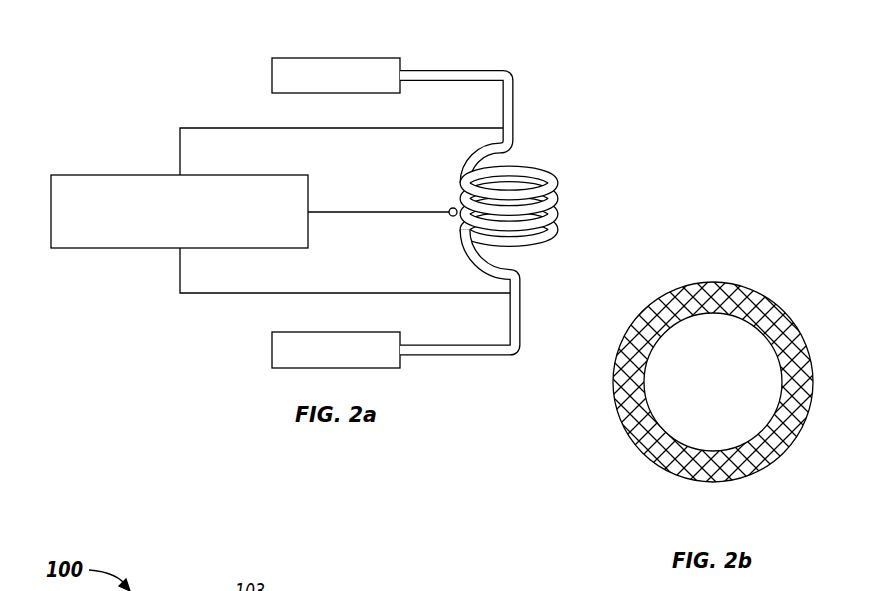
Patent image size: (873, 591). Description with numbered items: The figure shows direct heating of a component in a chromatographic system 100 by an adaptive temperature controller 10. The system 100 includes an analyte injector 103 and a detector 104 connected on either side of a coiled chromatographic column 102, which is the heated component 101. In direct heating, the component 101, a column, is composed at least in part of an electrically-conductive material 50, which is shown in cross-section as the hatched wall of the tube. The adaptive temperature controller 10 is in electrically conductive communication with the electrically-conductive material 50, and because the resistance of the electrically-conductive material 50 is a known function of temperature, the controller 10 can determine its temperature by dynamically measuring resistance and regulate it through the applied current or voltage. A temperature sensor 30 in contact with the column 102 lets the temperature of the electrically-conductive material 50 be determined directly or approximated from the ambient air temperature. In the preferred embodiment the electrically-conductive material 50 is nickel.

In FIG. 2A, the chromatographic system 100 is at (132, 44).
In FIG. 2A, the adaptive temperature controller 10 is at (70, 175).
In FIG. 2A, the analyte injector 103 is at (290, 58).
In FIG. 2A, the detector 104 is at (290, 332).
In FIG. 2A, the chromatographic column 102 is at (552, 164).
In FIG. 2A, the temperature sensor 30 is at (449, 209).
In FIG. 2B, the component 101 is at (714, 282).
In FIG. 2B, the electrically-conductive material 50 is at (766, 311).